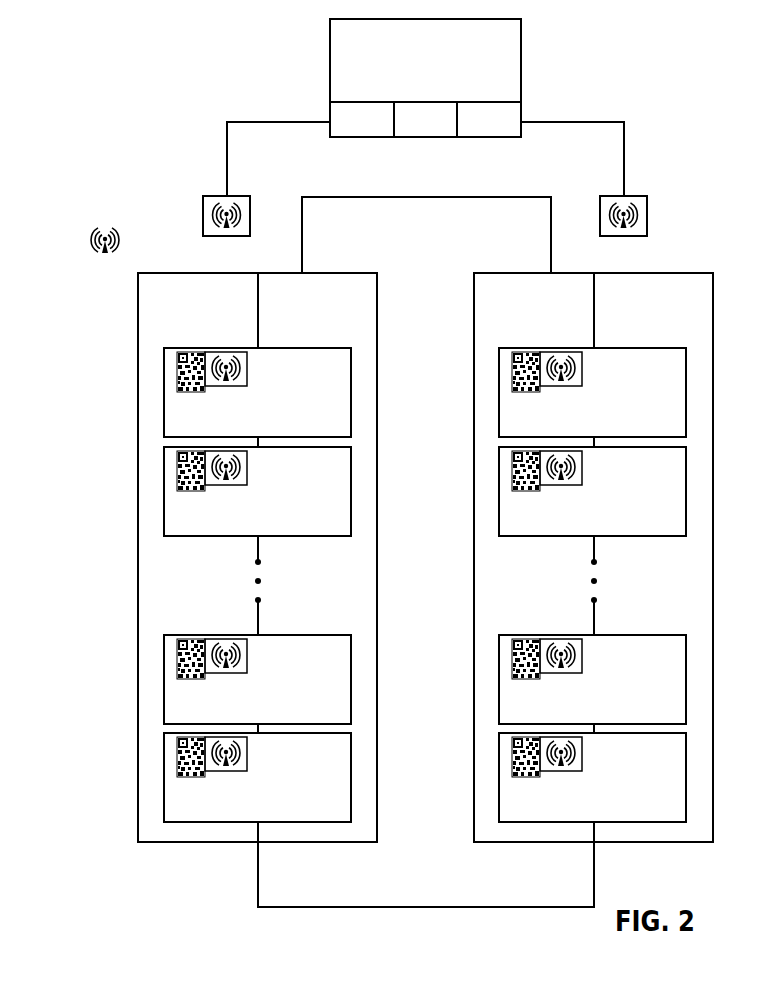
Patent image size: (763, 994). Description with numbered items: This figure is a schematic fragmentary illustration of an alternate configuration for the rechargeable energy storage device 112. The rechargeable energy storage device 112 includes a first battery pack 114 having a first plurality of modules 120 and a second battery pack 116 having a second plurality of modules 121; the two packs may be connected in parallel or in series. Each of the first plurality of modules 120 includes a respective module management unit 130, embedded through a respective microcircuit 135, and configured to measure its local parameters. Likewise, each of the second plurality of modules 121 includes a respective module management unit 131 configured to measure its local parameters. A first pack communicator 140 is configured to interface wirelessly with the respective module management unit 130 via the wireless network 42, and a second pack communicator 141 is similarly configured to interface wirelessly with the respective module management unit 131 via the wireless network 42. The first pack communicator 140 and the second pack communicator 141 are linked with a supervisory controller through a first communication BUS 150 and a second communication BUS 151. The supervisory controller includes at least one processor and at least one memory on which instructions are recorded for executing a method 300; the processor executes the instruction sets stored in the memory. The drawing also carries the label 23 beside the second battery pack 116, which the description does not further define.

The method 300 is at (383, 132).
The first communication BUS 150 is at (227, 158).
The second communication BUS 151 is at (624, 158).
The first pack communicator 140 is at (250, 205).
The second pack communicator 141 is at (647, 206).
The rechargeable energy storage device 112 is at (664, 238).
The first battery pack 114 is at (333, 272).
The second battery pack 116 is at (692, 272).
The wireless network 42 is at (97, 271).
The first plurality of modules 120 is at (157, 398).
The second plurality of modules 121 is at (488, 399).
The microcircuit 135 is at (177, 470).
The module management unit 130 is at (233, 497).
The module management unit 131 is at (571, 497).
The battery pack 23 is at (746, 507).